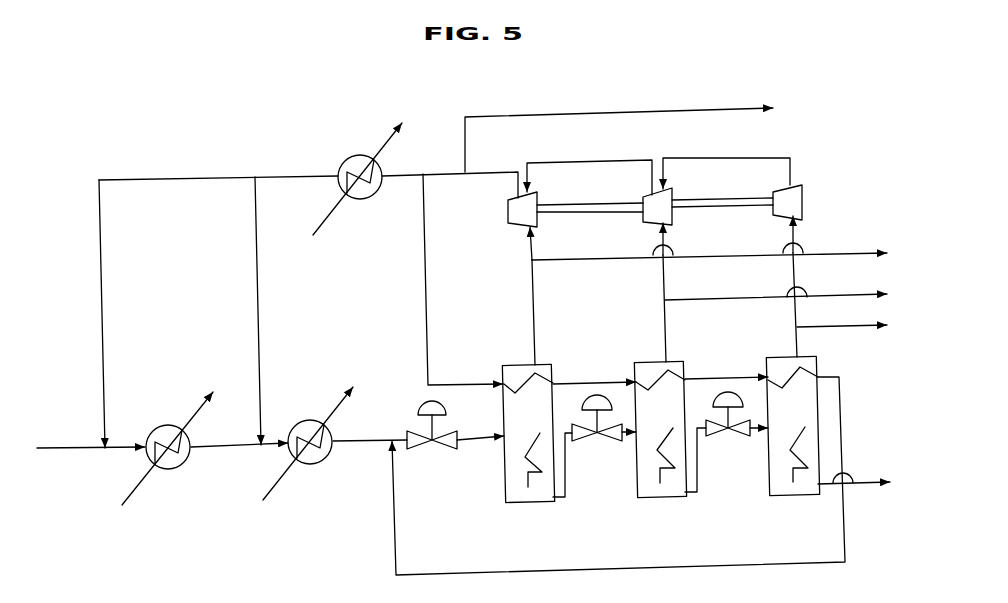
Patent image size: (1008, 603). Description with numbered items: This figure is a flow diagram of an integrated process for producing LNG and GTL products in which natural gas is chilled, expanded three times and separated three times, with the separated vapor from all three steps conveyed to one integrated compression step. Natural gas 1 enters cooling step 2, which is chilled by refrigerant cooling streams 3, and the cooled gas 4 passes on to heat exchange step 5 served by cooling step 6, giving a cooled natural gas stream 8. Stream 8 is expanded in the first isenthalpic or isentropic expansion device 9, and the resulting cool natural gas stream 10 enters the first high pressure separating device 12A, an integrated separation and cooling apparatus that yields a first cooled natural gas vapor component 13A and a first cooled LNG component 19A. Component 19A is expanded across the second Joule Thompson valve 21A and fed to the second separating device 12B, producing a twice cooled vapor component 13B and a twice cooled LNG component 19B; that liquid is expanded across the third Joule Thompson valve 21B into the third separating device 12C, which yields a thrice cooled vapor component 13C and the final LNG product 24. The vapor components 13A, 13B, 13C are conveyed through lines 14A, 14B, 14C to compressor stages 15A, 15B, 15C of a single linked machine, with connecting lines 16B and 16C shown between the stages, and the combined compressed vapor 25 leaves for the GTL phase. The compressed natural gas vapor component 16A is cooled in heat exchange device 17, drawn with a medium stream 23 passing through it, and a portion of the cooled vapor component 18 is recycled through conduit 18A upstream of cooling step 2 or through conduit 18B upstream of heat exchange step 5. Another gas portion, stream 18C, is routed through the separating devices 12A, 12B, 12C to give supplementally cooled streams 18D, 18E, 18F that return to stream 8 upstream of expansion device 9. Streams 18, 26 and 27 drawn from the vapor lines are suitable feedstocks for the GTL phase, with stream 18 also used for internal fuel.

The natural gas stream 1 is at (72, 445).
The cooling step 2 is at (187, 465).
The cooling streams 3 is at (137, 485).
The heated feed line 4 is at (223, 442).
The heat exchange step 5 is at (330, 458).
The cooling step 6 is at (275, 490).
The cooled natural gas stream 8 is at (360, 440).
The isenthalpic or isentropic expansion device 9 is at (418, 447).
The cool natural gas stream 10 is at (473, 438).
The first high pressure separating device 12A is at (512, 505).
The second high pressure separating device 12B is at (647, 502).
The third high pressure separating device 12C is at (785, 497).
The first cooled natural gas vapor component 13A is at (532, 295).
The twice cooled natural gas vapor component 13B is at (665, 310).
The thrice cooled natural gas vapor component 13C is at (797, 340).
The first turbine inlet line 14A is at (532, 250).
The second turbine inlet line 14B is at (657, 238).
The third turbine inlet line 14C is at (791, 240).
The first compressor stage 15A is at (508, 208).
The second compressor stage 15B is at (705, 185).
The third compressor stage 15C is at (833, 199).
The compressed natural gas vapor component 16A is at (455, 173).
The second turbine exhaust line 16B is at (580, 162).
The third turbine exhaust line 16C is at (742, 158).
The heat exchange device 17 is at (337, 183).
The cooled natural gas vapor component 18 is at (300, 177).
The conduit 18A is at (99, 270).
The conduit 18B is at (255, 267).
The compressed natural gas vapor component portion 18C is at (423, 287).
The supplementally cooled stream 18D is at (587, 377).
The supplementally cooled stream 18E is at (718, 375).
The supplementally cooled stream 18F is at (392, 540).
The first cooled LNG component 19A is at (572, 488).
The twice cooled LNG component 19B is at (698, 482).
The second Joule Thompson valve 21A is at (587, 440).
The third Joule Thompson valve 21B is at (717, 437).
The heating medium line 23 is at (321, 230).
The third cooled LNG product 24 is at (843, 478).
The combined natural gas vapor components 25 is at (580, 110).
The stream 26 is at (860, 293).
The stream 27 is at (857, 332).